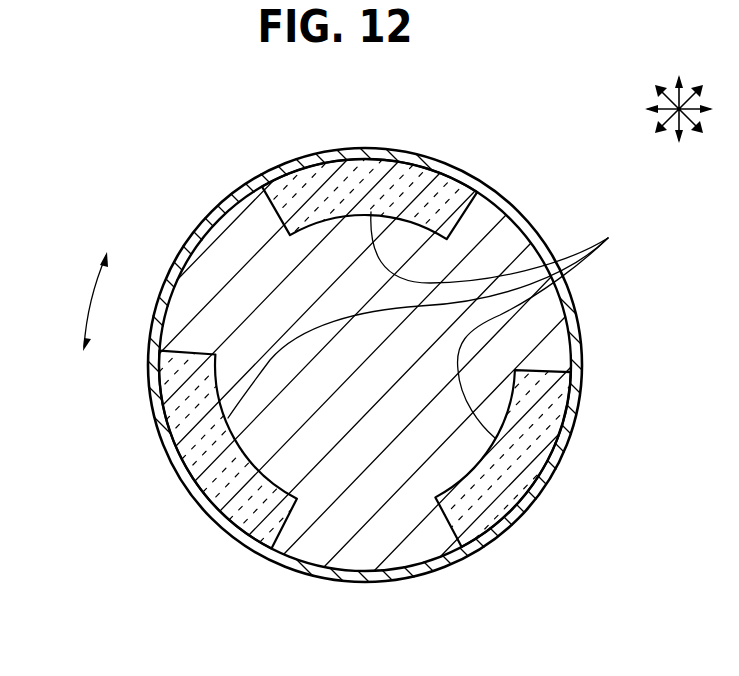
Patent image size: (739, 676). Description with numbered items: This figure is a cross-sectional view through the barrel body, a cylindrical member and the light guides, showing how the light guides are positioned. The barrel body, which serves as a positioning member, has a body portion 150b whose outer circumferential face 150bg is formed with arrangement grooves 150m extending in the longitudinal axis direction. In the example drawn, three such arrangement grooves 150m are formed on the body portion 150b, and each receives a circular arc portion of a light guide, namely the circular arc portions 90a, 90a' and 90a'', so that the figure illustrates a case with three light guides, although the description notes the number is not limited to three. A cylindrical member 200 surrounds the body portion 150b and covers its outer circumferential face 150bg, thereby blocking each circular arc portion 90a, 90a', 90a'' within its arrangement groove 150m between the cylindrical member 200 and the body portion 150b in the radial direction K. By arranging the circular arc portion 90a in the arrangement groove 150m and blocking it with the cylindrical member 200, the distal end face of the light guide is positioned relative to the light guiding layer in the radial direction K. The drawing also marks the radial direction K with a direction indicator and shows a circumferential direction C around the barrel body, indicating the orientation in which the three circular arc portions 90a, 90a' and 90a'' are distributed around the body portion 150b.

The cylindrical member 200 is at (288, 159).
The body portion 150b is at (374, 482).
The circular arc portion 90a is at (369, 155).
The circular arc portion 90a' is at (558, 458).
The circular arc portion 90a'' is at (211, 473).
The arrangement groove 150m is at (454, 325).
The outer circumferential face 150bg is at (236, 212).
The circumferential direction C is at (88, 301).
The radial direction indicator K is at (679, 95).